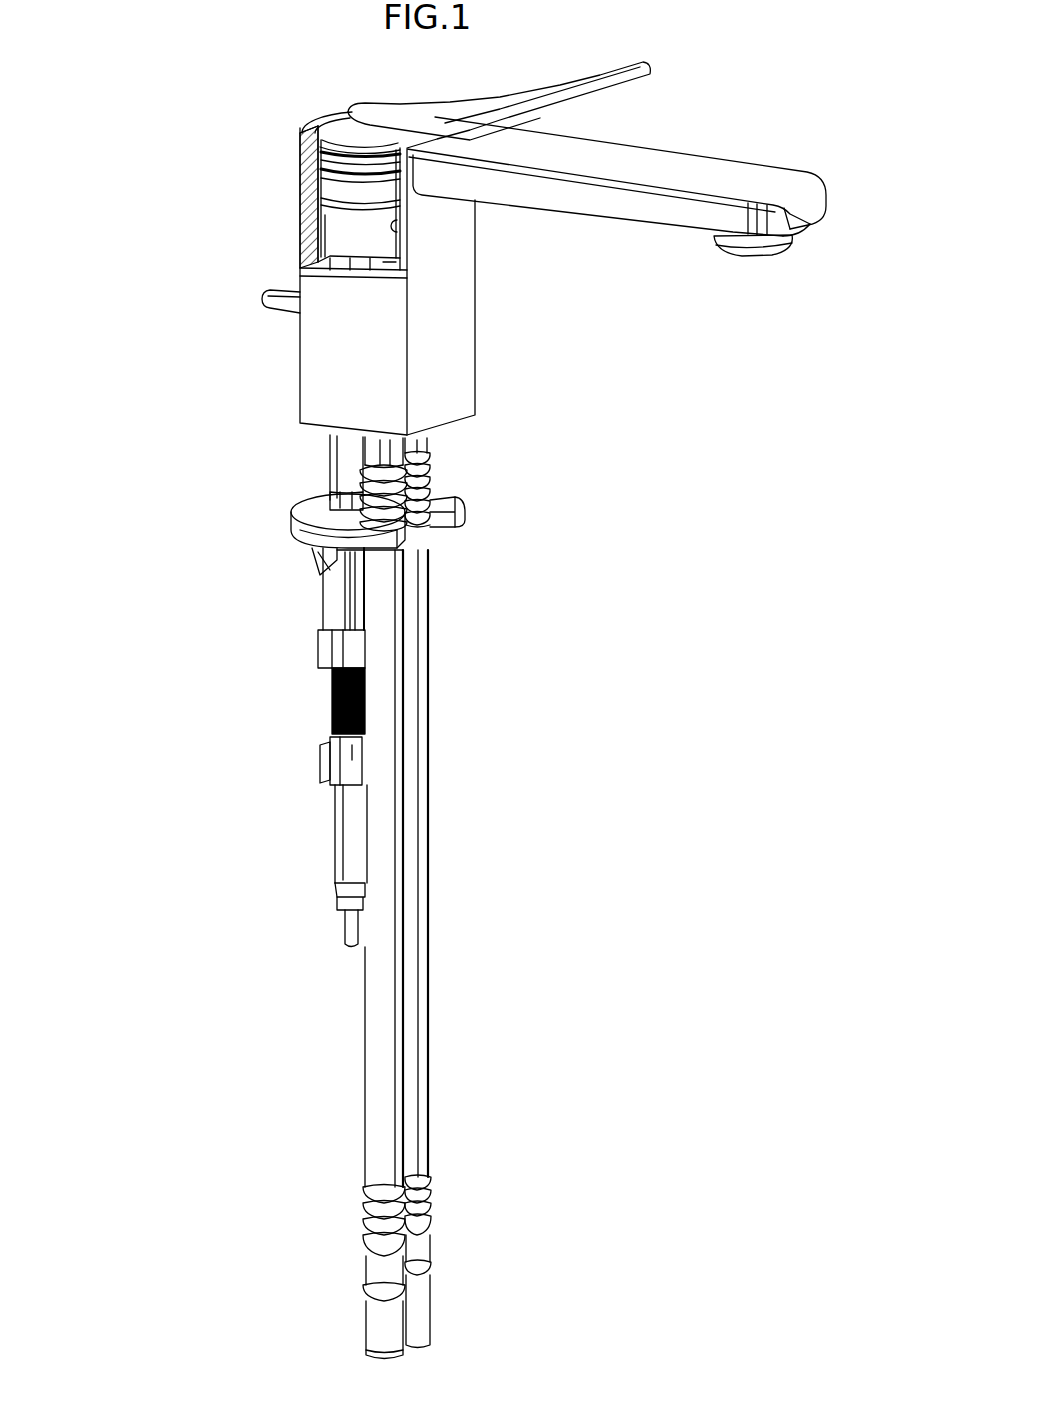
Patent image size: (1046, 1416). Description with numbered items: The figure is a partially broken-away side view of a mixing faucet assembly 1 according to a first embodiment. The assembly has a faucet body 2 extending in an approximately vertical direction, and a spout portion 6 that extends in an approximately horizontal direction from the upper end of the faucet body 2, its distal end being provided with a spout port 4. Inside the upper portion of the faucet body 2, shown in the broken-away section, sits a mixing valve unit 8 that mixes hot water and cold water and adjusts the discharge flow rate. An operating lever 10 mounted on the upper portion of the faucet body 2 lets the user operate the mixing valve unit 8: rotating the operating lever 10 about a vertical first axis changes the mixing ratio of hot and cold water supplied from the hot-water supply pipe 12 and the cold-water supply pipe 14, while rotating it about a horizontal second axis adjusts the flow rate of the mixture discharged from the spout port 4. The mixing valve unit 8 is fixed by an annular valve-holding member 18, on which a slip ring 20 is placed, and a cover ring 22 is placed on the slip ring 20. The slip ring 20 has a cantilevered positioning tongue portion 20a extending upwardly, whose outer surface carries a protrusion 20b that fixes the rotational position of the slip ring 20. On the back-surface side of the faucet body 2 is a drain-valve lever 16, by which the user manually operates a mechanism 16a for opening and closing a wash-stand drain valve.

The mixing faucet assembly 1 is at (588, 383).
The faucet body 2 is at (458, 307).
The spout port 4 is at (763, 257).
The spout portion 6 is at (660, 170).
The mixing valve unit 8 is at (338, 230).
The operating lever 10 is at (428, 100).
The hot-water supply pipe 12 is at (375, 1078).
The cold-water supply pipe 14 is at (412, 1068).
The drain-valve lever 16 is at (263, 306).
The mechanism for opening and closing the drain valve 16a is at (338, 812).
The valve-holding member 18 is at (337, 188).
The slip ring 20 is at (297, 165).
The positioning tongue portion 20a is at (302, 130).
The protrusion 20b is at (297, 152).
The cover ring 22 is at (330, 120).